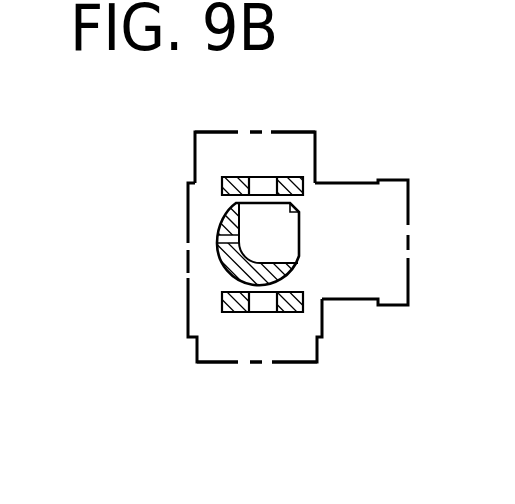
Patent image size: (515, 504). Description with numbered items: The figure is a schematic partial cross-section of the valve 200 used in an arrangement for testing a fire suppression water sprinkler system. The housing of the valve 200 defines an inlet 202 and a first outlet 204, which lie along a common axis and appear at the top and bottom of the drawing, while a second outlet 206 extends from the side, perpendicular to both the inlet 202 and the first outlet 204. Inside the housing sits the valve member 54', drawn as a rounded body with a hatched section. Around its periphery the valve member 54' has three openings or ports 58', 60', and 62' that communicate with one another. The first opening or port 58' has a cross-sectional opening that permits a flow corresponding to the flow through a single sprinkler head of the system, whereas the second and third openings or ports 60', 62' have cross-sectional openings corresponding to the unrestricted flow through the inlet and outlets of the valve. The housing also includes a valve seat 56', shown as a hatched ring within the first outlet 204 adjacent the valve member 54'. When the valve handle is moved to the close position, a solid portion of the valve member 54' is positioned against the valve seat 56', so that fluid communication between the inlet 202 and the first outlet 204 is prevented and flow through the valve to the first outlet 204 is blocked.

The valve 200 is at (198, 146).
The inlet 202 is at (237, 131).
The first outlet 204 is at (297, 362).
The second outlet 206 is at (408, 216).
The valve member 54' is at (339, 166).
The valve seat 56' is at (257, 250).
The first opening or port 58' is at (257, 250).
The second opening or port 60' is at (285, 139).
The third opening or port 62' is at (336, 242).